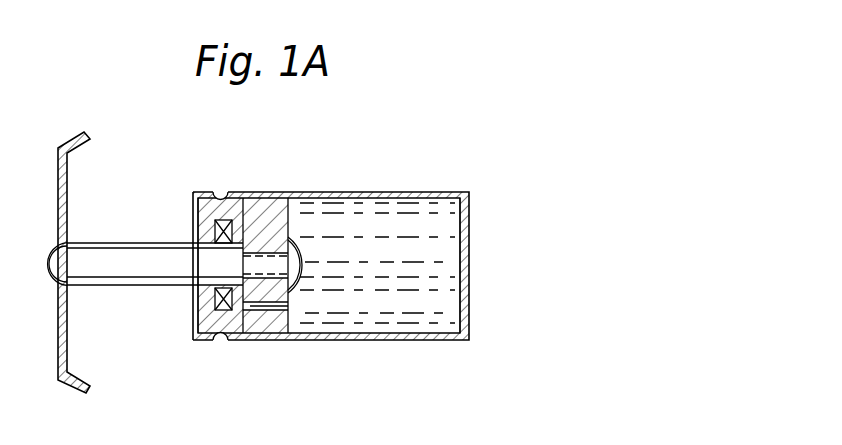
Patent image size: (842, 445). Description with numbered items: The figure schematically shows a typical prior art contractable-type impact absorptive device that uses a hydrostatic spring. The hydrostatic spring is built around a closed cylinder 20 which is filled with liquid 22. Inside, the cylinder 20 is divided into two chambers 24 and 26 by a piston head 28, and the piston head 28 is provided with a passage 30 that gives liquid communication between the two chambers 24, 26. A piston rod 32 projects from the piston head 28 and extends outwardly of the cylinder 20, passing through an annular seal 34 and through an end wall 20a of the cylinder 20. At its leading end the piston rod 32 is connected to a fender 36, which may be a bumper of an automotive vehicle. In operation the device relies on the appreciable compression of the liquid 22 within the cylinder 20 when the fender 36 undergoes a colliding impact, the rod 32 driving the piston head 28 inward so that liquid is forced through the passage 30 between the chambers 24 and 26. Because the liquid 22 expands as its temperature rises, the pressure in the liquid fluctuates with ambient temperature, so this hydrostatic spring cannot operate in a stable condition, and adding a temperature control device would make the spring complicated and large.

The closed cylinder 20 is at (415, 341).
The end wall 20a is at (194, 222).
The liquid 22 is at (453, 227).
The chamber 24 is at (221, 196).
The chamber 26 is at (387, 274).
The piston head 28 is at (266, 325).
The passage 30 is at (289, 308).
The piston rod 32 is at (143, 288).
The annular seal 34 is at (213, 342).
The fender 36 is at (70, 173).